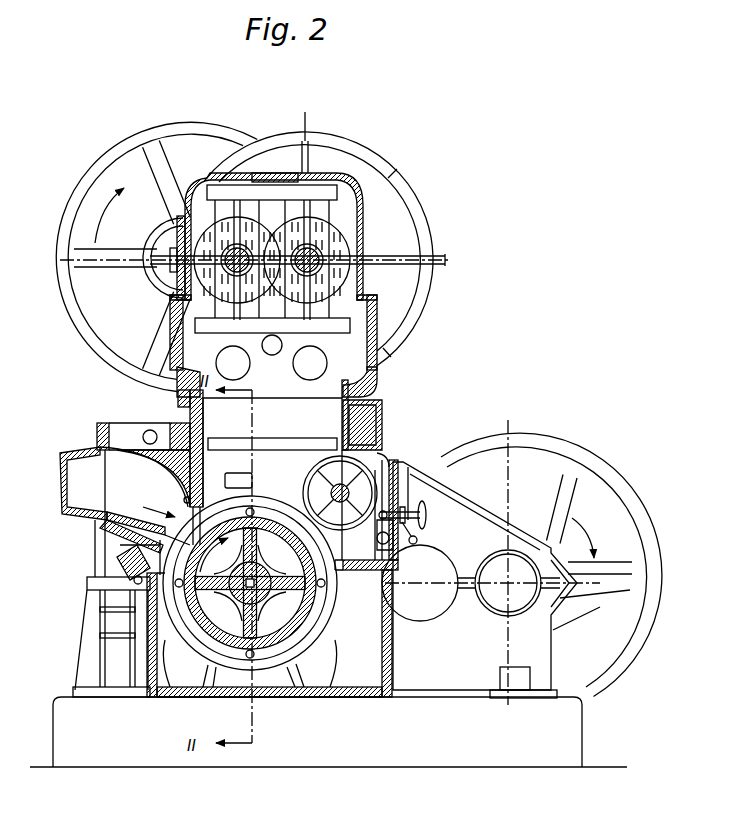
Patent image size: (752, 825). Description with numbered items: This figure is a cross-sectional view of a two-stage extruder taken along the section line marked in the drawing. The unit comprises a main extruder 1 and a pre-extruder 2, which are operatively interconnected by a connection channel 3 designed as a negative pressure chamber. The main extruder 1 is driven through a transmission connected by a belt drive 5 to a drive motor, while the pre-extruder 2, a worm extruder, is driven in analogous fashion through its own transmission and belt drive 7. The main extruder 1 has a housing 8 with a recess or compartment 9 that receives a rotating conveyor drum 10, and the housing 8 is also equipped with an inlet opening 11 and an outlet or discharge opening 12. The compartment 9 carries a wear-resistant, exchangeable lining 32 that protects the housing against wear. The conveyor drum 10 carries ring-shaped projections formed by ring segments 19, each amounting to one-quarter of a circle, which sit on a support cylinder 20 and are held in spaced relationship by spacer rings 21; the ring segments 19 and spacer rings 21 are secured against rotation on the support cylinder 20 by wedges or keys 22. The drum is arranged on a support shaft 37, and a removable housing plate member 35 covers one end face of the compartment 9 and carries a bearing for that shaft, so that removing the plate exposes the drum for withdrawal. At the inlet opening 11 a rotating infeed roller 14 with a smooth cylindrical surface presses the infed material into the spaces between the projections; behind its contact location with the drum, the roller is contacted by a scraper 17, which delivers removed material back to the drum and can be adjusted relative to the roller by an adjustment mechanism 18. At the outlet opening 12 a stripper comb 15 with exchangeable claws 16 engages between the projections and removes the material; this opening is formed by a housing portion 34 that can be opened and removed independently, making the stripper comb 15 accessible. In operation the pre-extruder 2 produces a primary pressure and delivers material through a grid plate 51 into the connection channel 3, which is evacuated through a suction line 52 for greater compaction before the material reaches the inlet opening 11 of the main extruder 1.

The main extruder 1 is at (318, 700).
The pre-extruder 2 is at (378, 220).
The connection channel 3 is at (378, 380).
The belt drive 5 is at (540, 448).
The belt drive 7 is at (193, 124).
The housing 8 is at (383, 412).
The recess or compartment 9 is at (283, 670).
The conveyor drum 10 is at (225, 640).
The inlet opening 11 is at (282, 455).
The outlet or discharge opening 12 is at (120, 488).
The infeed roller 14 is at (378, 462).
The stripper comb 15 is at (153, 505).
The claws 16 is at (128, 546).
The stripper or scraper 17 is at (354, 571).
The adjustment mechanism 18 is at (434, 519).
The ring segments 19 is at (240, 660).
The support or carrier cylinder 20 is at (330, 622).
The spacer rings 21 is at (135, 626).
The wedges or keys 22 is at (258, 670).
The lining or covering 32 is at (326, 655).
The housing portion 34 is at (128, 428).
The housing plate member 35 is at (184, 502).
The support shaft 37 is at (272, 579).
The grid plate 51 is at (350, 275).
The suction line or conduit 52 is at (272, 355).